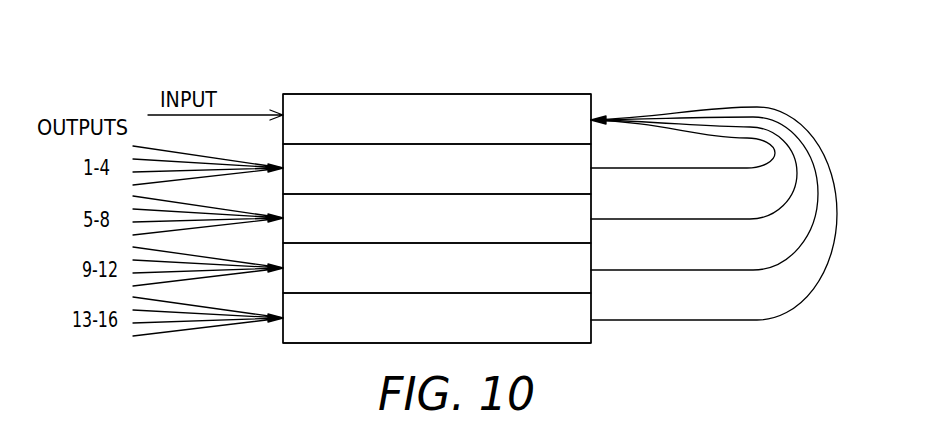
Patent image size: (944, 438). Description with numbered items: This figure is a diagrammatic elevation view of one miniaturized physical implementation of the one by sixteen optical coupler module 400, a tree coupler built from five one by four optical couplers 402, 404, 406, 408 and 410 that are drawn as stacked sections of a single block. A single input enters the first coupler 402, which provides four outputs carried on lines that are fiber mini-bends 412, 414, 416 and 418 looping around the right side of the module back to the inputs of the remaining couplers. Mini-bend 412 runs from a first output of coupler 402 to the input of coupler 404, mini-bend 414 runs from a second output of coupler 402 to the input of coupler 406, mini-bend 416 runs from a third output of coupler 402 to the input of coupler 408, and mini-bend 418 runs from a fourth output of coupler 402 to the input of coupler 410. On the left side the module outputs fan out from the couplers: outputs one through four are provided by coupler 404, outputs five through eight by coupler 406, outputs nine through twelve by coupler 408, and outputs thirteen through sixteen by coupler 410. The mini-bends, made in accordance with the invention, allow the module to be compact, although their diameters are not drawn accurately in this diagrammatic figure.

The optical coupler module 400 is at (538, 88).
The optical coupler 402 is at (448, 133).
The optical coupler 404 is at (448, 185).
The optical coupler 406 is at (448, 235).
The optical coupler 408 is at (448, 285).
The optical coupler 410 is at (448, 337).
The fiber mini-bend 412 is at (747, 107).
The fiber mini-bend 414 is at (780, 138).
The fiber mini-bend 416 is at (807, 152).
The fiber mini-bend 418 is at (814, 287).